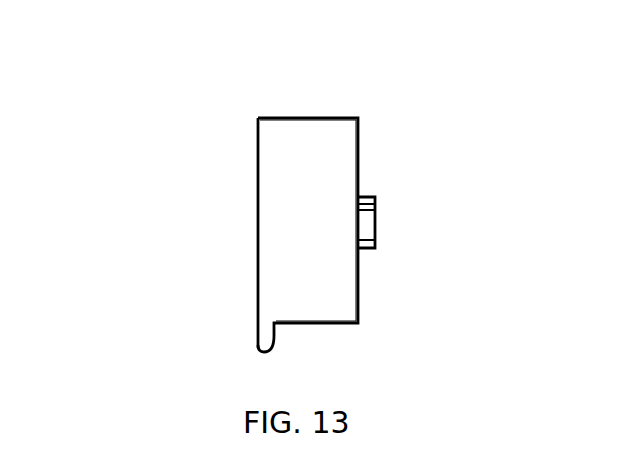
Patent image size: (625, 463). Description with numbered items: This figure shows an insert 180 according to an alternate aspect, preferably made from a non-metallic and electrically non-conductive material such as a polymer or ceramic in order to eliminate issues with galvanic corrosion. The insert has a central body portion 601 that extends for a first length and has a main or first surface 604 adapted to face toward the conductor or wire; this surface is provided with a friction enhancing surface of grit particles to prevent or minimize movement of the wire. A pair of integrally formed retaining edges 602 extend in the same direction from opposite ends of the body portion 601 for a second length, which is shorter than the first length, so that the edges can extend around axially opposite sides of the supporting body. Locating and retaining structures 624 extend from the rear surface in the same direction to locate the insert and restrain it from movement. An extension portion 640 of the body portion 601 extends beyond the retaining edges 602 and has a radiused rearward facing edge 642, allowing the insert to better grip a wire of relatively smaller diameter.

The insert 180 is at (190, 100).
The central body portion 601 is at (262, 117).
The retaining edges 602 is at (318, 150).
The first surface 604 is at (258, 163).
The locating and retaining structures 624 is at (365, 226).
The extension portion 640 is at (267, 330).
The rearward facing edge 642 is at (270, 351).